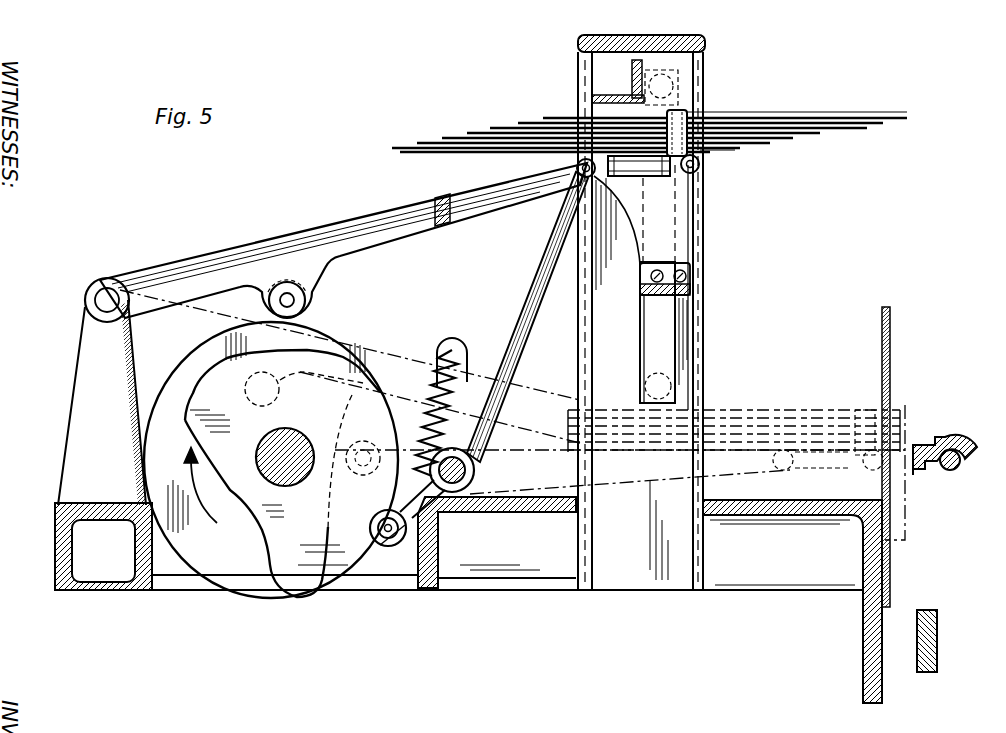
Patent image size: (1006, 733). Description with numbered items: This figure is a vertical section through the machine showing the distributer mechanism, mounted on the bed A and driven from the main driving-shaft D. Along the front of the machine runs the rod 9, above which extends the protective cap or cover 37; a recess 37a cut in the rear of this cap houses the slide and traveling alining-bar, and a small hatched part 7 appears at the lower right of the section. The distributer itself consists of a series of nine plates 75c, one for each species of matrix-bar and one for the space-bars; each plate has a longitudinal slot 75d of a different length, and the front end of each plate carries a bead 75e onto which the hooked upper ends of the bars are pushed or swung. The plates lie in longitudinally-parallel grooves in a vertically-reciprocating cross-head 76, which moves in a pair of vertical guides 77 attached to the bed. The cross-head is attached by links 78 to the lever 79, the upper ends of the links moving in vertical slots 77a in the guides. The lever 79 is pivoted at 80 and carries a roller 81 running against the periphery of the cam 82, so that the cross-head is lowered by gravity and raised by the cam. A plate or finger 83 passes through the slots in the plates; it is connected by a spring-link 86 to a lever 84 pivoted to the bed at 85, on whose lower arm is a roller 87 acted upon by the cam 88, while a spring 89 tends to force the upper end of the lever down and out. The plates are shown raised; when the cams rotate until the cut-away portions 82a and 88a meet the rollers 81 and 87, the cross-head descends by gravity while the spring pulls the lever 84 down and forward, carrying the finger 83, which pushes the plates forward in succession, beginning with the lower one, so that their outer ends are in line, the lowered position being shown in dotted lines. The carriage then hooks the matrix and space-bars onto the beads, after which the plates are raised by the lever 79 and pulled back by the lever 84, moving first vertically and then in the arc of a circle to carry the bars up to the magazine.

The bed of the machine A is at (182, 575).
The main driving-shaft D is at (290, 487).
The block 7 is at (918, 642).
The rod 9 is at (950, 472).
The cap or cover 37 is at (945, 440).
The recess 37a is at (918, 455).
The distributer-plates 75c is at (535, 112).
The longitudinal slot 75d is at (778, 125).
The bead 75e is at (820, 135).
The cross-head 76 is at (705, 255).
The vertical guides 77 is at (645, 332).
The vertical slots 77a is at (667, 345).
The links 78 is at (665, 88).
The lever 79 is at (400, 238).
The pivot 80 is at (110, 298).
The roller 81 is at (306, 302).
The cam 82 is at (186, 380).
The cut-away portion 82a is at (353, 422).
The finger 83 is at (686, 132).
The lever 84 is at (520, 297).
The pivot 85 is at (458, 483).
The spring-link 86 is at (622, 200).
The roller 87 is at (390, 550).
The cam 88 is at (372, 546).
The cut-away portion 88a is at (235, 492).
The spring 89 is at (421, 413).